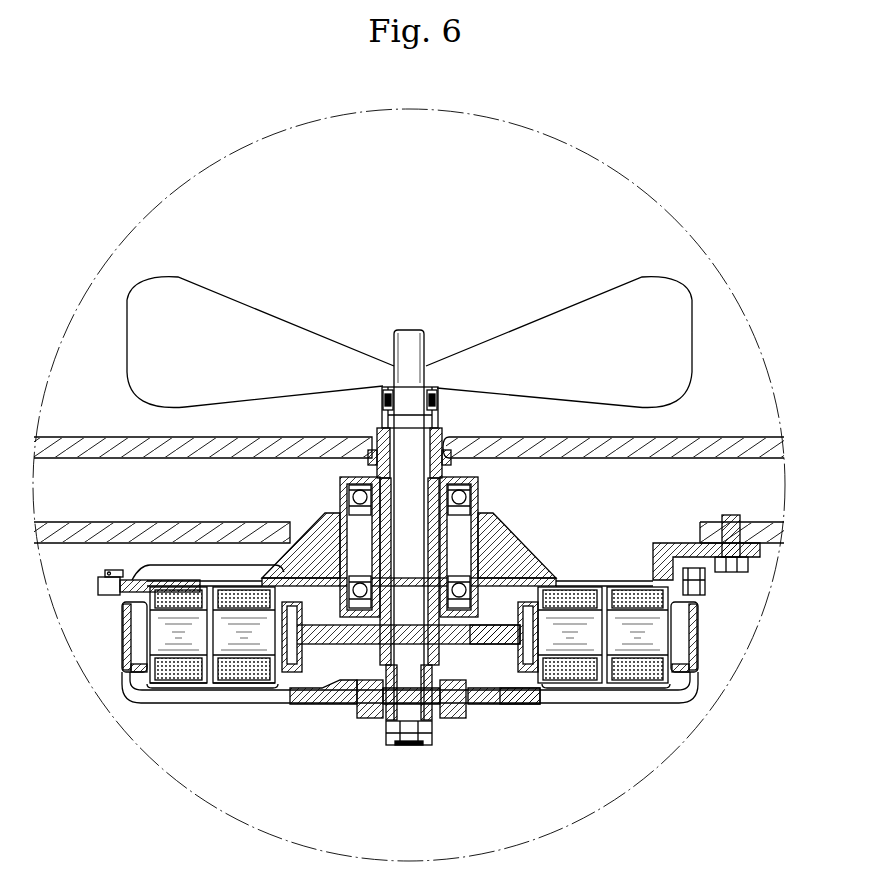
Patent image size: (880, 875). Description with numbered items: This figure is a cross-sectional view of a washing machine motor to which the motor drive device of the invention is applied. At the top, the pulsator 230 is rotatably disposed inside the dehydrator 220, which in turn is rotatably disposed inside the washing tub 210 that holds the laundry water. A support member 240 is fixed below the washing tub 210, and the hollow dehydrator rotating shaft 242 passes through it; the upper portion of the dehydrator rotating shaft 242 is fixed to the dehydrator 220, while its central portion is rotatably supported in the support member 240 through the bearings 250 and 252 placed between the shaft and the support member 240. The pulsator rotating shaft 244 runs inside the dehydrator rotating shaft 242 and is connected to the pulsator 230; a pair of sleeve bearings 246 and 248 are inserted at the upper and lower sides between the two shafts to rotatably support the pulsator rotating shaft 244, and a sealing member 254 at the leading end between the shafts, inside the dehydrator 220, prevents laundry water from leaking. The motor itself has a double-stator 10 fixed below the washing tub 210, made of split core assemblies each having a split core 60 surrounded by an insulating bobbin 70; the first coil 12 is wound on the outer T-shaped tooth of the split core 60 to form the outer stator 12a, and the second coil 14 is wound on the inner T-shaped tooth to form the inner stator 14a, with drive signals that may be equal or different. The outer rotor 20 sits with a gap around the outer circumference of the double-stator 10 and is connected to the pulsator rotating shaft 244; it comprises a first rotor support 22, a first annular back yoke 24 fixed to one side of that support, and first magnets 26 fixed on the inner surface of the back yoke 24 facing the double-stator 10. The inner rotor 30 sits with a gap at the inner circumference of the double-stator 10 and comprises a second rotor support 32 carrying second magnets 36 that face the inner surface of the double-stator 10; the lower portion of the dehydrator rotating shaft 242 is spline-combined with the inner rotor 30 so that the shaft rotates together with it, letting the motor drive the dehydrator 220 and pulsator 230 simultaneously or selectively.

The double-stator 10 is at (373, 716).
The first coil 12 is at (163, 674).
The outer stator 12a is at (183, 692).
The second coil 14 is at (252, 678).
The inner stator 14a is at (230, 692).
The outer rotor 20 is at (703, 633).
The first rotor support 22 is at (517, 692).
The first annular back yoke 24 is at (700, 608).
The first magnets 26 is at (684, 647).
The inner rotor 30 is at (505, 660).
The second rotor support 32 is at (490, 642).
The second magnets 36 is at (528, 657).
The split core 60 is at (157, 633).
The insulating bobbin 70 is at (218, 594).
The washing tub 210 is at (205, 528).
The dehydrator 220 is at (684, 459).
The pulsator 230 is at (655, 387).
The support member 240 is at (520, 545).
The dehydrator rotating shaft 242 is at (436, 533).
The pulsator rotating shaft 244 is at (398, 645).
The sleeve bearing 246 is at (380, 450).
The sleeve bearing 248 is at (360, 638).
The bearing 250 is at (464, 503).
The bearing 252 is at (477, 578).
The sealing member 254 is at (437, 398).